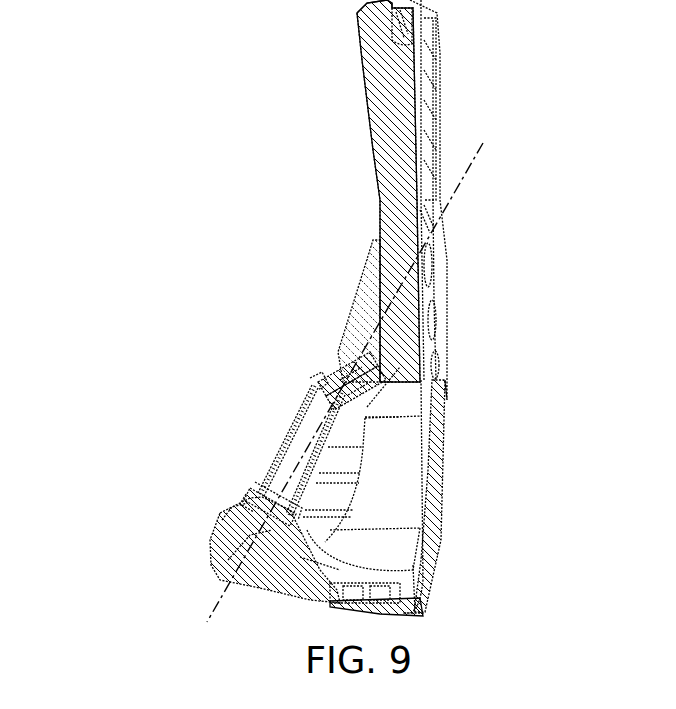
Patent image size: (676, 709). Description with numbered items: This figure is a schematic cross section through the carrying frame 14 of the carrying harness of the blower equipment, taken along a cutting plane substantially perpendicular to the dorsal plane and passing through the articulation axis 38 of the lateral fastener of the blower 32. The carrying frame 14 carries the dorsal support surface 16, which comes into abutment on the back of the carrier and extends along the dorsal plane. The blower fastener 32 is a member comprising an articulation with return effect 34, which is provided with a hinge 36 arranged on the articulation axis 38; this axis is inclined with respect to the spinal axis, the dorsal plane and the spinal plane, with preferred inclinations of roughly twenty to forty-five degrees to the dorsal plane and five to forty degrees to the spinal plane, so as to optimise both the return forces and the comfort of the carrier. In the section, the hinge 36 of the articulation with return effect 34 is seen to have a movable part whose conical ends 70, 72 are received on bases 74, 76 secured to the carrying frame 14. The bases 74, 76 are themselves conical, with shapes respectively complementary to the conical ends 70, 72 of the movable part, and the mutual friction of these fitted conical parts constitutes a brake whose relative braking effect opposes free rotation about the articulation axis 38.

The carrying frame 14 is at (430, 132).
The dorsal support surface 16 is at (434, 176).
The blower fastener 32 is at (274, 434).
The articulation with return effect 34 is at (190, 537).
The hinge 36 is at (208, 560).
The articulation axis 38 is at (315, 437).
The conical end 70 is at (330, 376).
The conical end 72 is at (255, 497).
The base 74 is at (345, 376).
The base 76 is at (263, 512).